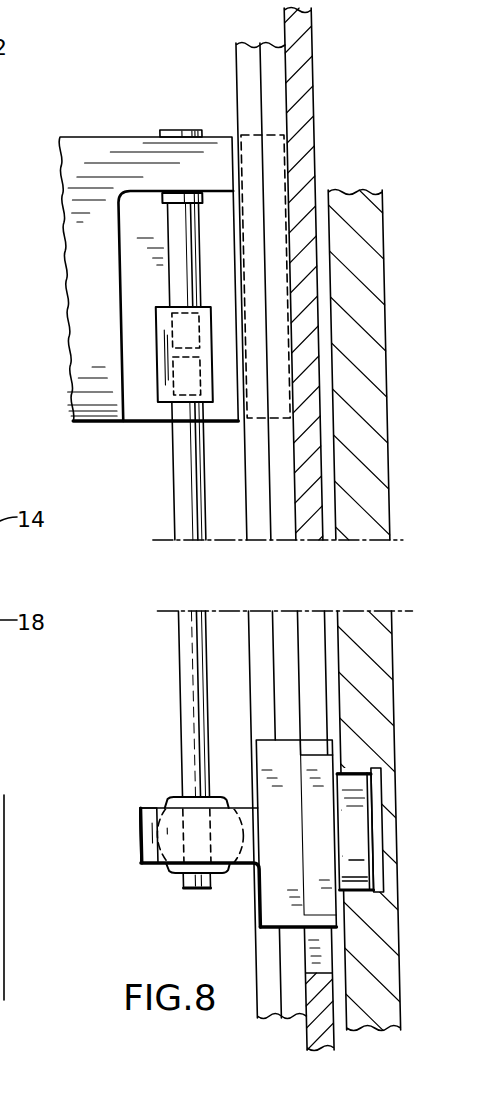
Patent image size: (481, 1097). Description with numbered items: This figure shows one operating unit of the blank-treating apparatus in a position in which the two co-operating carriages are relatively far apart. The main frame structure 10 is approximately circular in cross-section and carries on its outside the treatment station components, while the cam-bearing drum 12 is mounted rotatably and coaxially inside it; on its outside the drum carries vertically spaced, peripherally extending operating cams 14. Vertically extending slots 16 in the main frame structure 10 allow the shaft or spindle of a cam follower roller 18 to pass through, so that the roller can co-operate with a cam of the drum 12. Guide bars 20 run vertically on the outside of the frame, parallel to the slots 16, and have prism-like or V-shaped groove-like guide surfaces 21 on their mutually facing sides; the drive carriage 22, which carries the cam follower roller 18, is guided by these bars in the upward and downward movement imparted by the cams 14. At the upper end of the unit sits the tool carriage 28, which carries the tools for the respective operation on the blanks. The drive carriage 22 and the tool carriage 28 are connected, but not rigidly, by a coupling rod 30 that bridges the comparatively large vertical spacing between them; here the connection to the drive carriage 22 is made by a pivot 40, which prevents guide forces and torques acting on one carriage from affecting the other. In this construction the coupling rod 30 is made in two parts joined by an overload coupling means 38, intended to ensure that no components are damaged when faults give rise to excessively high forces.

The main frame structure 10 is at (299, 42).
The cam-bearing drum 12 is at (346, 200).
The operating cams 14 is at (358, 780).
The vertically extending slots 16 is at (0, 392).
The cam follower roller 18 is at (348, 880).
The guide bars 20 is at (271, 58).
The guide surfaces 21 is at (248, 92).
The drive carriage 22 is at (128, 868).
The tool carriage 28 is at (66, 261).
The coupling rod 30 is at (185, 695).
The overload coupling means 38 is at (149, 383).
The pivot 40 is at (137, 822).